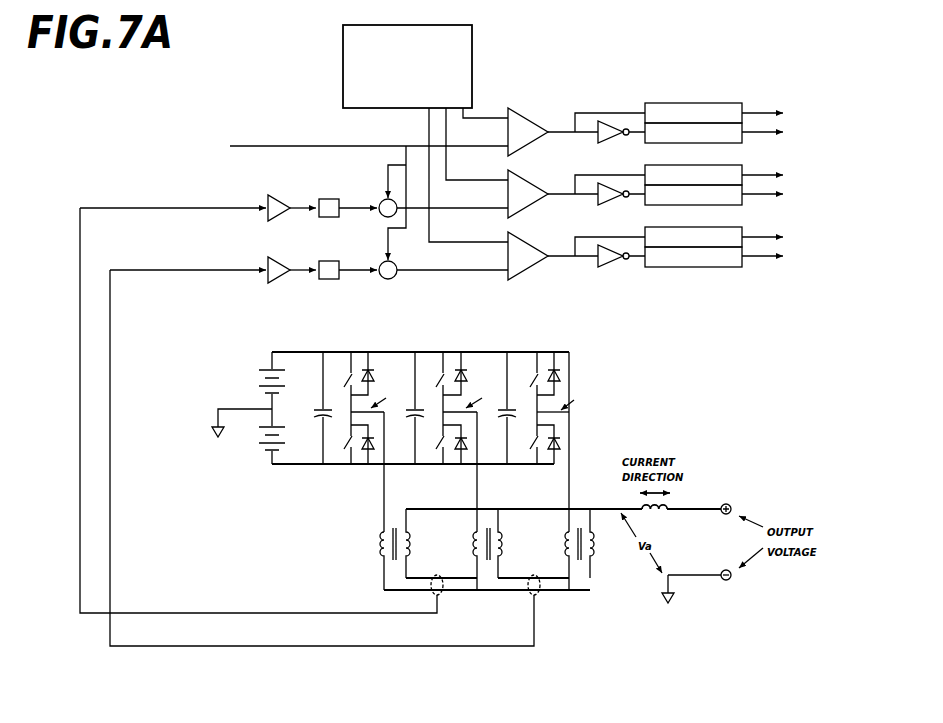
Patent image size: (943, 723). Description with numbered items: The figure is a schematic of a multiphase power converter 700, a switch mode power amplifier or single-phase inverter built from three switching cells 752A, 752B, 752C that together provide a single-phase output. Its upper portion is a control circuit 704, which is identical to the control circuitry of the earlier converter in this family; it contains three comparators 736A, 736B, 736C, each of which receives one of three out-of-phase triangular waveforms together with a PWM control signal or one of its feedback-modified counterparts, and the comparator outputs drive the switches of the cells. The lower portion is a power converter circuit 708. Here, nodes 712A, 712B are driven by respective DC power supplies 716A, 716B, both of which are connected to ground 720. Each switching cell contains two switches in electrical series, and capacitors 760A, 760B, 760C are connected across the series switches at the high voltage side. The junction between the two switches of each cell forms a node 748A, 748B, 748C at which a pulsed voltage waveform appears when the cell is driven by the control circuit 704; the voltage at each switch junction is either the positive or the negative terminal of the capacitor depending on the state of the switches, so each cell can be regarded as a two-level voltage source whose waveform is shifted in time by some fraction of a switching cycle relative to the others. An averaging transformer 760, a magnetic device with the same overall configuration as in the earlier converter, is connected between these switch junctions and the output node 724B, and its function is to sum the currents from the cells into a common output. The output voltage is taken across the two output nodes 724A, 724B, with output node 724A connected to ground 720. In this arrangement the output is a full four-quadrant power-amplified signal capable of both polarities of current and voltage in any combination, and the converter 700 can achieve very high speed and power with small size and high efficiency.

The multiphase power converter 700 is at (768, 412).
The control circuit 704 is at (585, 279).
The power converter circuit 708 is at (626, 414).
The node 712A is at (288, 352).
The node 712B is at (297, 465).
The DC power supply 716A is at (262, 370).
The DC power supply 716B is at (262, 446).
The ground 720 is at (215, 428).
The output node 724A is at (730, 580).
The output node 724B is at (728, 503).
The comparator 736A is at (512, 106).
The comparator 736B is at (527, 172).
The comparator 736C is at (530, 235).
The node 748A is at (390, 378).
The node 748B is at (493, 378).
The node 748C is at (585, 380).
The switching cell 752A is at (352, 478).
The switching cell 752B is at (450, 477).
The switching cell 752C is at (538, 477).
The averaging transformer 760 is at (391, 596).
The capacitor 760A is at (316, 404).
The capacitor 760B is at (409, 407).
The capacitor 760C is at (503, 407).